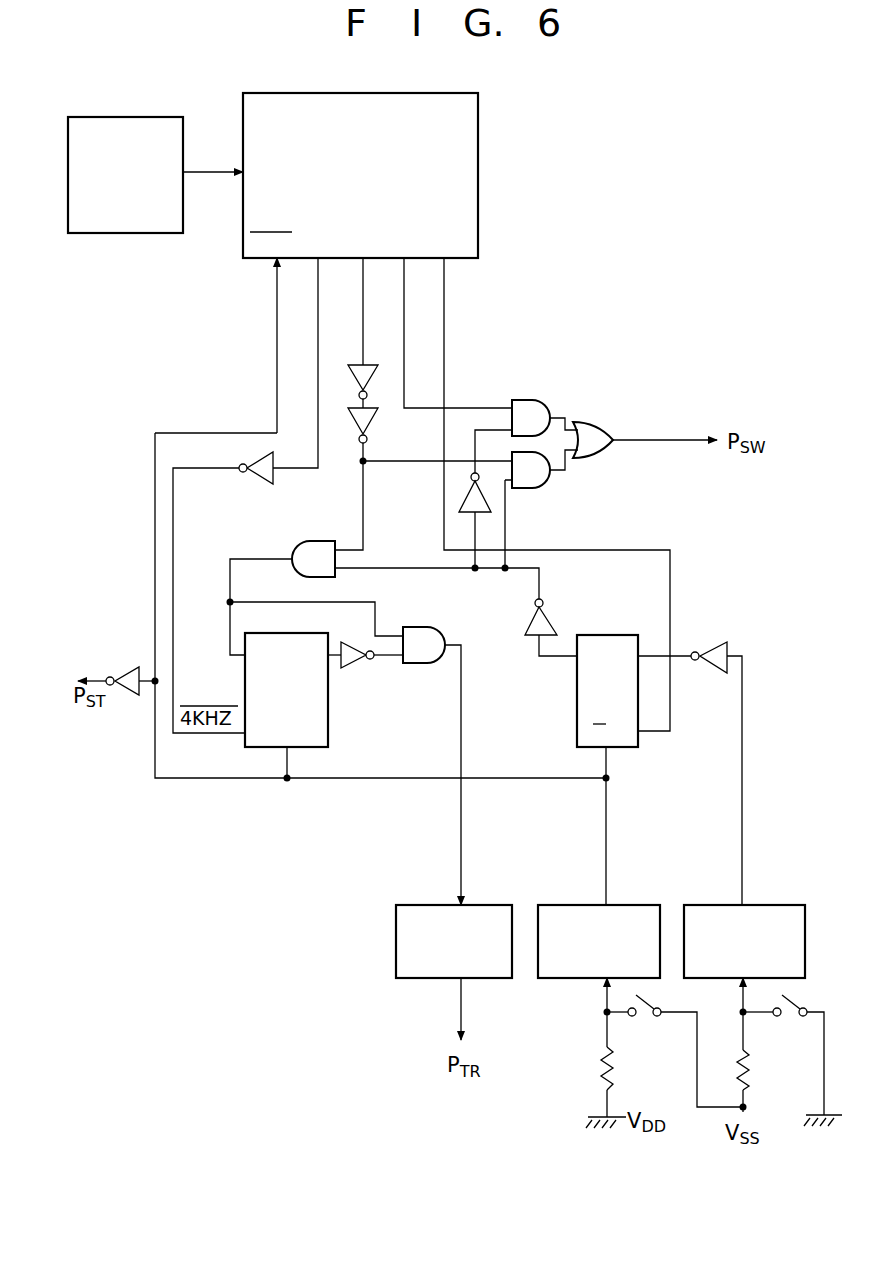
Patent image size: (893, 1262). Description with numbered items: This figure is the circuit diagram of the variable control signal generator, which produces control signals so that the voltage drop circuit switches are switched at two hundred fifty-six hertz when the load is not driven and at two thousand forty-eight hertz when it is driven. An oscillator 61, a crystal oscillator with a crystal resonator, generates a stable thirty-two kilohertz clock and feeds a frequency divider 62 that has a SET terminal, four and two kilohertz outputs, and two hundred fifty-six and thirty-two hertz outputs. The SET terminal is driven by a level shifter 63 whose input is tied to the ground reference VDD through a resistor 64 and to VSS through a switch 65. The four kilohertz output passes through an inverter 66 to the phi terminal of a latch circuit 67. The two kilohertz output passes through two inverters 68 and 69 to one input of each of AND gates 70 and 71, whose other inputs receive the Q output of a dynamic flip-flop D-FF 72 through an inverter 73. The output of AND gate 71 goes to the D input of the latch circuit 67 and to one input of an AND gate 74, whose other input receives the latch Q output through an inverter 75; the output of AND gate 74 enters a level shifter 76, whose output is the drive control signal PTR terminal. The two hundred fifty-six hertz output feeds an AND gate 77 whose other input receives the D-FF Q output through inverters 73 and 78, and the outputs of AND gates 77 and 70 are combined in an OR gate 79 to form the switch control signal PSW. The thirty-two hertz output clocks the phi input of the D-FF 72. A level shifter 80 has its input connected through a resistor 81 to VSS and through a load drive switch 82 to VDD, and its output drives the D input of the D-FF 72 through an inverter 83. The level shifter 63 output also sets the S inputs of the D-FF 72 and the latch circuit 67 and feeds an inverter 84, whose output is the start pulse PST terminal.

The oscillator 61 is at (160, 122).
The frequency divider 62 is at (478, 118).
The level shifter 63 is at (580, 906).
The resistor 64 is at (600, 1062).
The switch 65 is at (644, 1016).
The inverter 66 is at (268, 478).
The latch circuit 67 is at (328, 735).
The inverter 68 is at (356, 370).
The inverter 69 is at (362, 420).
The AND gate 70 is at (535, 490).
The AND gate 71 is at (320, 541).
The dynamic flip-flop 72 is at (605, 640).
The inverter 73 is at (548, 620).
The AND gate 74 is at (432, 633).
The inverter 75 is at (355, 665).
The level shifter 76 is at (427, 980).
The AND gate 77 is at (518, 404).
The inverter 78 is at (460, 500).
The OR gate 79 is at (590, 428).
The level shifter 80 is at (770, 906).
The resistor 81 is at (752, 1068).
The load drive switch 82 is at (790, 1016).
The inverter 83 is at (714, 673).
The inverter 84 is at (125, 697).